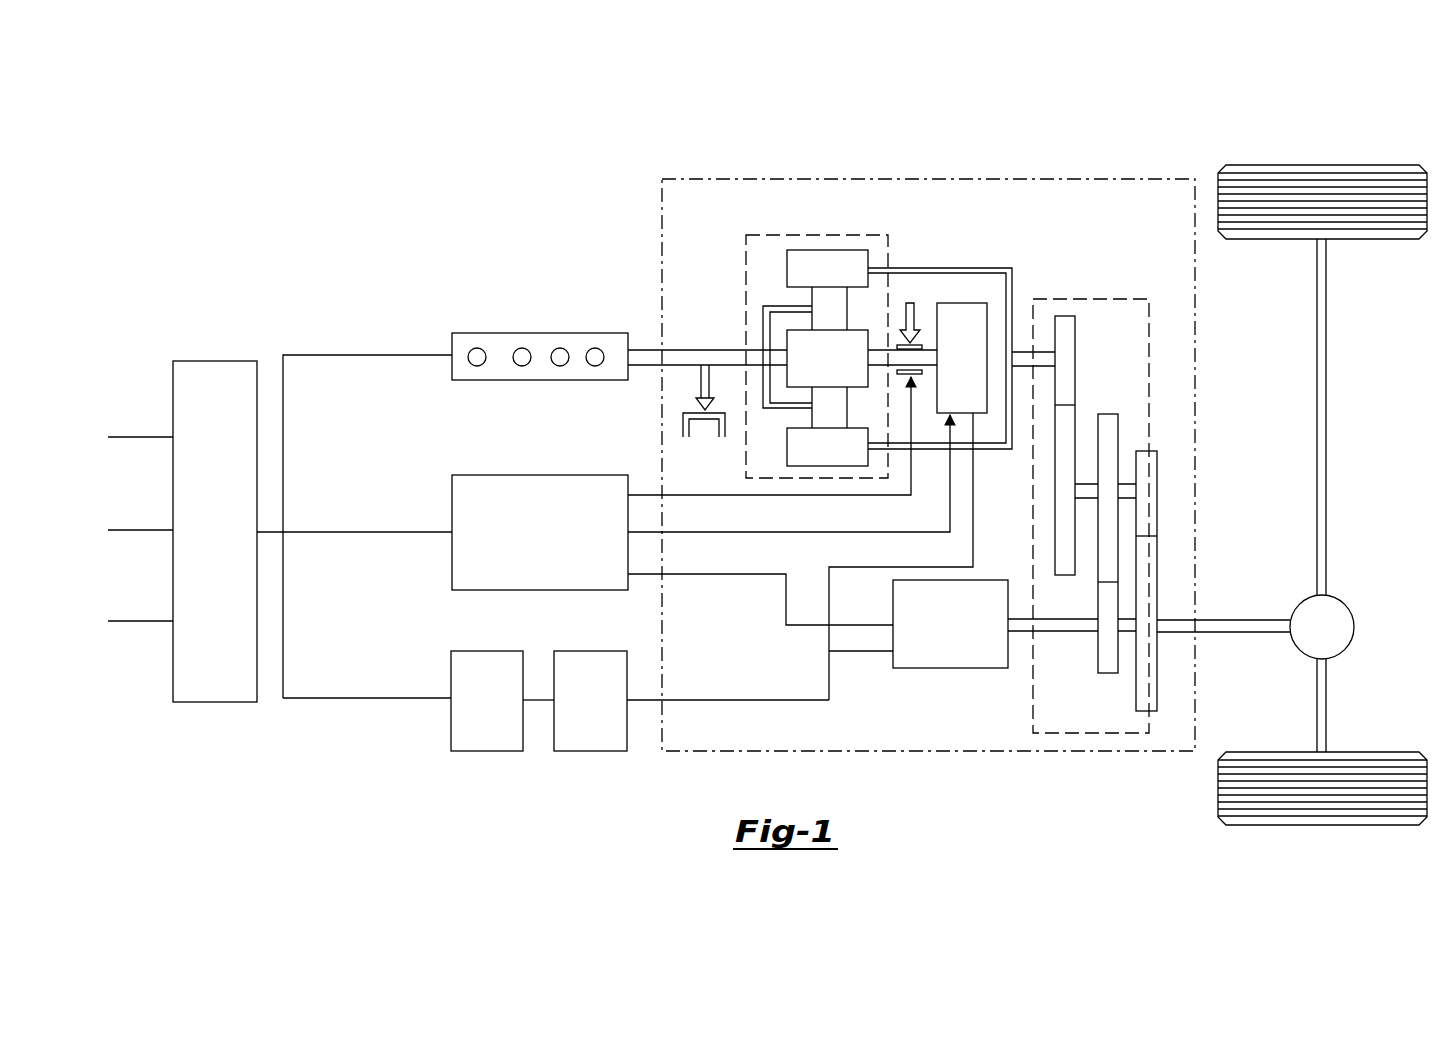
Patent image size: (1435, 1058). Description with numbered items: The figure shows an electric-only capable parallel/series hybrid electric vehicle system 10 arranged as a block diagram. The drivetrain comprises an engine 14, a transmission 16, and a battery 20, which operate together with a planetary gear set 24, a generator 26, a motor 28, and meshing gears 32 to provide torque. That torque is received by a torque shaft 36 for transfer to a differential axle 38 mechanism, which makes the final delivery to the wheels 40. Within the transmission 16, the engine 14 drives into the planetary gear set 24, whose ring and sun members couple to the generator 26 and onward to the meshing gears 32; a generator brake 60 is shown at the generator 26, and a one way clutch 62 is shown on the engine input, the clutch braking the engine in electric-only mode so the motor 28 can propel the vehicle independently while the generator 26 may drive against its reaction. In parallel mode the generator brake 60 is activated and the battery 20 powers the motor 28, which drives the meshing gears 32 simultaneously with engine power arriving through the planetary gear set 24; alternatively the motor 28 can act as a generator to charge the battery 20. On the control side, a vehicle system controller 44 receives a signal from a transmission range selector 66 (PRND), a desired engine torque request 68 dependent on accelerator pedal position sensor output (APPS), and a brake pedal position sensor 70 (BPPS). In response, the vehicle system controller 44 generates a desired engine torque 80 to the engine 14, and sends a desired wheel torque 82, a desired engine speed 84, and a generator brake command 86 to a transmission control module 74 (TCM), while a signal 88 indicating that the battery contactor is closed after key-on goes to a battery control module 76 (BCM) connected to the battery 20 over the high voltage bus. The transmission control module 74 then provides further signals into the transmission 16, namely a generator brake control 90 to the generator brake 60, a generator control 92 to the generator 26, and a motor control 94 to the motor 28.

The parallel/series hybrid vehicle system 10 is at (1068, 128).
The engine 14 is at (597, 333).
The transmission 16 is at (972, 178).
The battery 20 is at (590, 752).
The planetary gear set 24 is at (884, 242).
The generator 26 is at (977, 303).
The motor 28 is at (918, 672).
The meshing gears 32 is at (1065, 299).
The torque shaft 36 is at (1220, 634).
The differential axle 38 is at (1345, 600).
The wheels 40 is at (1368, 165).
The vehicle system controller 44 is at (226, 361).
The generator brake 60 is at (905, 320).
The one way clutch 62 is at (683, 425).
The transmission range selector 66 is at (146, 438).
The desired engine torque request 68 is at (146, 531).
The brake pedal position sensor 70 is at (146, 622).
The transmission control module 74 is at (607, 475).
The battery control module 76 is at (480, 752).
The desired engine torque 80 is at (366, 355).
The desired wheel torque 82 is at (437, 464).
The desired engine speed 84 is at (283, 486).
The generator brake command 86 is at (381, 532).
The battery contactor closed signal 88 is at (381, 698).
The generator brake control 90 is at (838, 512).
The generator control 92 is at (797, 550).
The motor control 94 is at (762, 597).